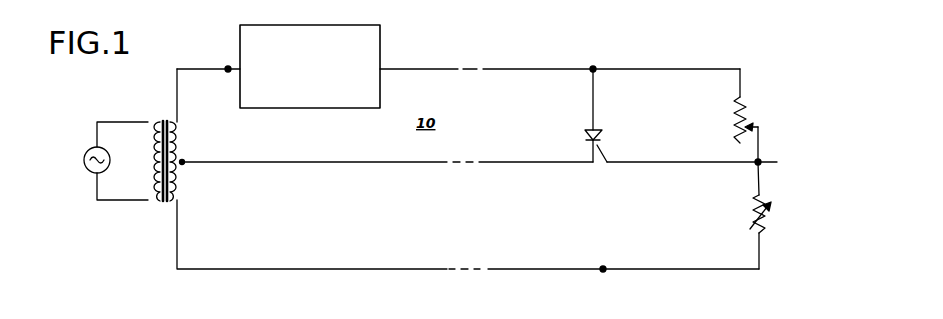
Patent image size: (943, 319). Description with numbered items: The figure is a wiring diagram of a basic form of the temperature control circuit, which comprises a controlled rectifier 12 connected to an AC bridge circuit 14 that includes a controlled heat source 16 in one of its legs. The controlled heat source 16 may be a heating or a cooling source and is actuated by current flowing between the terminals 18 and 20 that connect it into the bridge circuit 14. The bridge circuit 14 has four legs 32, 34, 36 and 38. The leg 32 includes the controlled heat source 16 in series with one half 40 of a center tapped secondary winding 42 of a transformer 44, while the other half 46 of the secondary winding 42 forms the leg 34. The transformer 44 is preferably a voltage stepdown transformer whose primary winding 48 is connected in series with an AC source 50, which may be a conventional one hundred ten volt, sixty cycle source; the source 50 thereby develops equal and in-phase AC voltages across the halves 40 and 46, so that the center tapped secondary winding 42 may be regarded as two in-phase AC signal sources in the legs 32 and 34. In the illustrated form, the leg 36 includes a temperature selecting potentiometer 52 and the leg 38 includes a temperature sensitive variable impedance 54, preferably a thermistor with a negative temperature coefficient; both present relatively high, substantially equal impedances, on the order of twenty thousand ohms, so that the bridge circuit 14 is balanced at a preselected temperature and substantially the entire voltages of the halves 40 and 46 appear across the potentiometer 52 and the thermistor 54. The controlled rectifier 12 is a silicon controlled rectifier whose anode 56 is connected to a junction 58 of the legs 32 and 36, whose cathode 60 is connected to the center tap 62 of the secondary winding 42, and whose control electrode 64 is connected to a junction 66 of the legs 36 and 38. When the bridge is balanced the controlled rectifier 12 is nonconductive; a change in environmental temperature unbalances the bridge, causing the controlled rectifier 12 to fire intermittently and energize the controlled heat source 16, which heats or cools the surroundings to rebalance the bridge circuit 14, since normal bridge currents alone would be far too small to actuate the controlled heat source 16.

The controlled rectifier 12 is at (600, 115).
The AC bridge circuit 14 is at (404, 269).
The controlled heat source 16 is at (381, 33).
The terminal 18 is at (226, 71).
The terminal 20 is at (392, 69).
The leg 32 is at (539, 69).
The leg 34 is at (542, 269).
The leg 36 is at (727, 69).
The leg 38 is at (700, 270).
The one-half of secondary winding 40 is at (182, 144).
The center tapped secondary winding 42 is at (165, 203).
The transformer 44 is at (163, 120).
The other half of secondary winding 46 is at (182, 186).
The primary winding 48 is at (152, 143).
The AC source 50 is at (87, 169).
The temperature selecting potentiometer 52 is at (750, 109).
The temperature sensitive variable impedance 54 is at (773, 218).
The anode 56 is at (587, 128).
The junction 58 is at (594, 67).
The cathode 60 is at (588, 150).
The center tap 62 is at (184, 163).
The control electrode 64 is at (606, 135).
The junction 66 is at (777, 162).